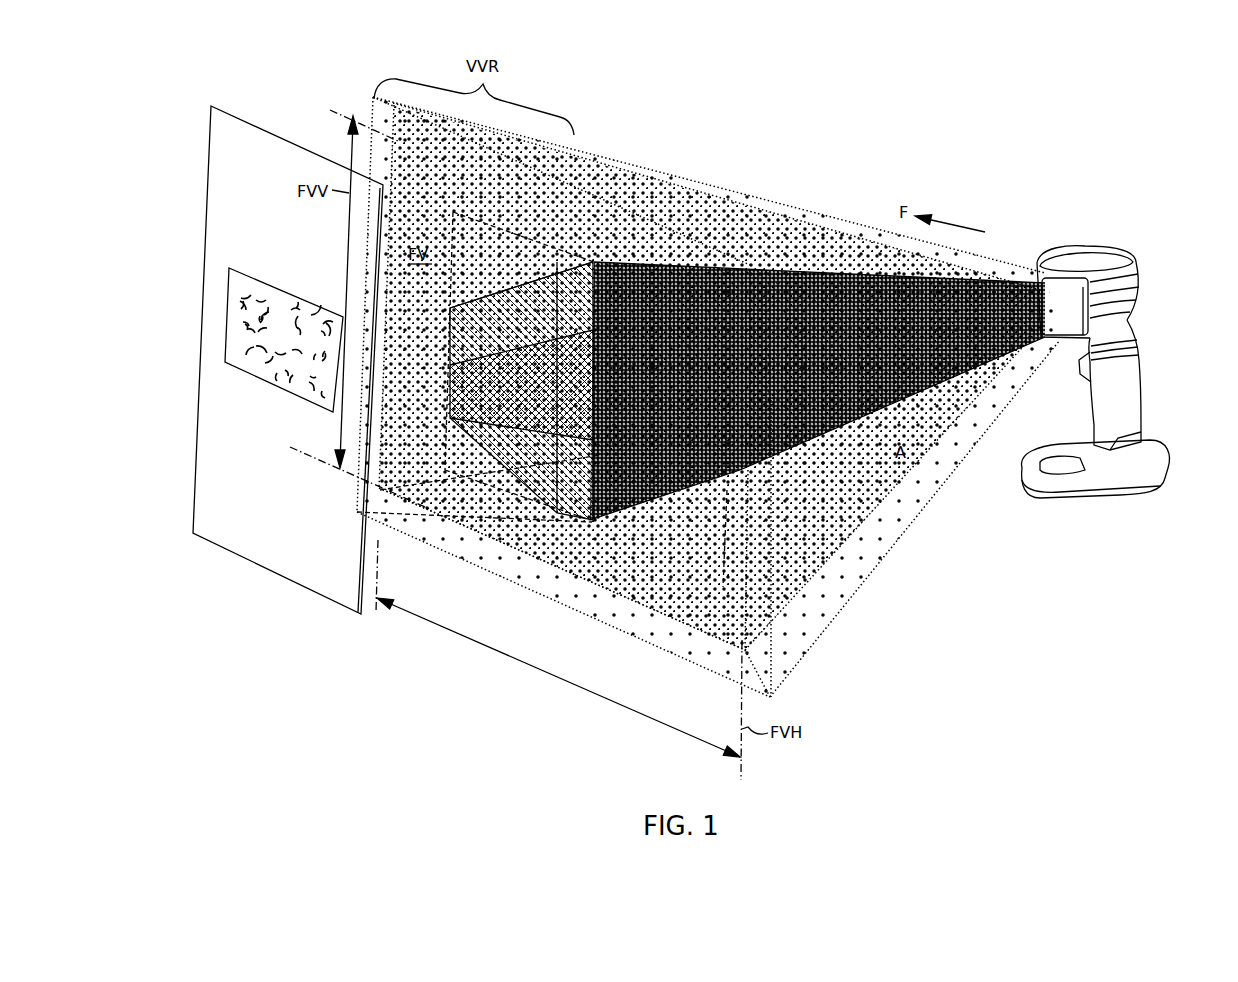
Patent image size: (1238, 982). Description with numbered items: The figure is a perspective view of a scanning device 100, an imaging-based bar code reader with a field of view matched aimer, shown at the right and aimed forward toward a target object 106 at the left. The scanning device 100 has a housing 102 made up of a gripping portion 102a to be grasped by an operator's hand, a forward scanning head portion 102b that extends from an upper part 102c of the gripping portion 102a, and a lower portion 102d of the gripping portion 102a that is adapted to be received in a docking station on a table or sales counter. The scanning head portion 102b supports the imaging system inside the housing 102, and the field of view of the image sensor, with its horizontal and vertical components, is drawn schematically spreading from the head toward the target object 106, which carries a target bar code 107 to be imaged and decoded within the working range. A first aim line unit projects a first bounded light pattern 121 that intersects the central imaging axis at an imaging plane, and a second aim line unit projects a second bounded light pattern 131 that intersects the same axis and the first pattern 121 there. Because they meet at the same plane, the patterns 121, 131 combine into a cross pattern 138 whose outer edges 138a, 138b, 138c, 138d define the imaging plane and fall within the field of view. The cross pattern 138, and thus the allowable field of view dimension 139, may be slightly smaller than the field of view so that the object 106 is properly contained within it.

The scanning device 100 is at (1062, 207).
The housing 102 is at (1119, 394).
The gripping portion 102a is at (1140, 356).
The scanning head portion 102b is at (1116, 250).
The upper part of the gripping portion 102c is at (1136, 330).
The lower portion of the gripping portion 102d is at (1090, 508).
The target object 106 is at (198, 452).
The target bar code 107 is at (228, 330).
The first bounded light pattern 121 is at (725, 455).
The second bounded light pattern 131 is at (518, 470).
The cross pattern 138 is at (493, 452).
The outer edge 138a is at (594, 263).
The outer edge 138b is at (750, 468).
The outer edge 138c is at (447, 337).
The outer edge 138d is at (570, 534).
The allowable field of view dimension 139 is at (700, 578).